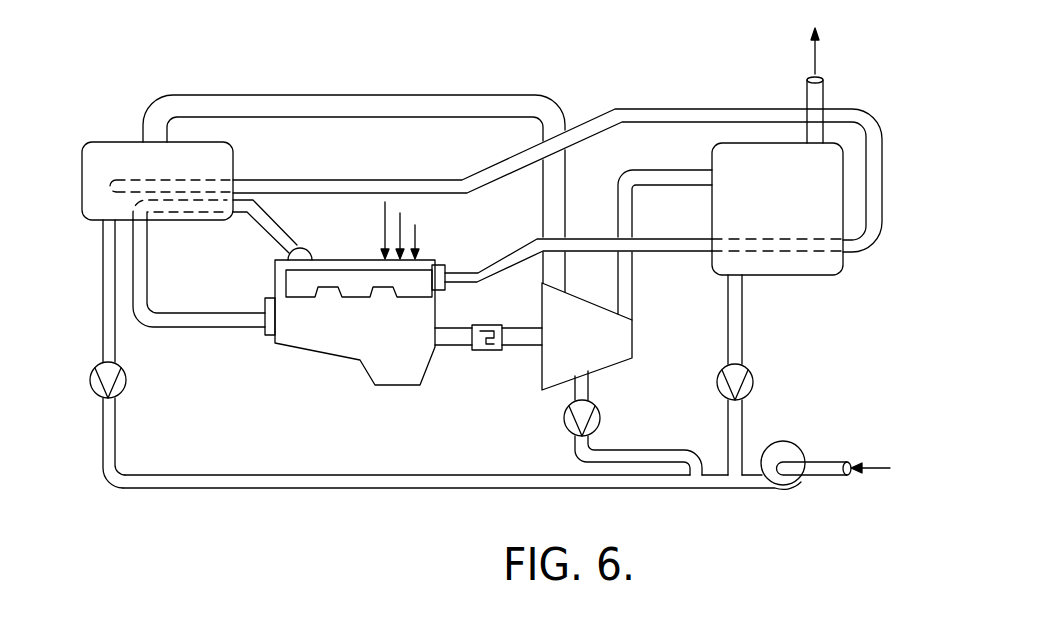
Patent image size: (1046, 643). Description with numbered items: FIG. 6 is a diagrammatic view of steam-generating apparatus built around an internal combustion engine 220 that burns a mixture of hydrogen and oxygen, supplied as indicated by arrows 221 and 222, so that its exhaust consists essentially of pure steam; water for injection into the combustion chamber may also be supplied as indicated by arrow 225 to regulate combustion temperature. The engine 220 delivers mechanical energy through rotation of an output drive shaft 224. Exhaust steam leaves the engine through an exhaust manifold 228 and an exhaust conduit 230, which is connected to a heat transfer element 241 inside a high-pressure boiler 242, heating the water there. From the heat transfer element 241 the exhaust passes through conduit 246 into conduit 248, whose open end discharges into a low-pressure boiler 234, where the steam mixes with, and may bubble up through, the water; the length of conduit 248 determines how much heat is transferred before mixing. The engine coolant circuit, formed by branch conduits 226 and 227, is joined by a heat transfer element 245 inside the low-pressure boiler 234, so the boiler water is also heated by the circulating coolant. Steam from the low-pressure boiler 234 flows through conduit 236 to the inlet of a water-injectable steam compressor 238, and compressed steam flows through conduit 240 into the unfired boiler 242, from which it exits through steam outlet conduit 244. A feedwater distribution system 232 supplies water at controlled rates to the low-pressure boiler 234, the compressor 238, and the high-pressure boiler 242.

The internal combustion engine 220 is at (306, 362).
The arrow 221 is at (385, 202).
The arrow 222 is at (400, 213).
The output drive shaft 224 is at (455, 335).
The arrow 225 is at (415, 238).
The conduit 226 is at (279, 236).
The conduit 227 is at (205, 318).
The exhaust manifold 228 is at (328, 274).
The exhaust conduit 230 is at (510, 260).
The feedwater distribution system 232 is at (731, 505).
The low-pressure boiler 234 is at (92, 132).
The conduit 236 is at (420, 94).
The steam compressor 238 is at (617, 382).
The conduit 240 is at (678, 172).
The heat transfer element 241 is at (797, 245).
The high-pressure boiler 242 is at (848, 286).
The steam outlet conduit 244 is at (818, 102).
The heat transfer element 245 is at (185, 222).
The conduit 246 is at (597, 130).
The conduit 248 is at (182, 178).